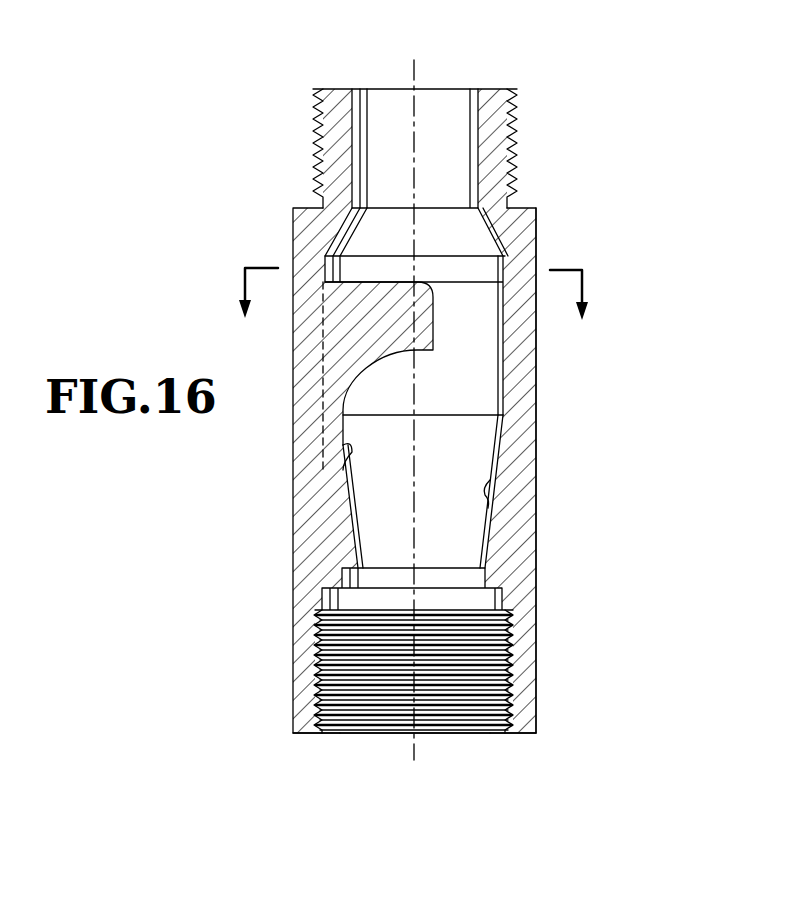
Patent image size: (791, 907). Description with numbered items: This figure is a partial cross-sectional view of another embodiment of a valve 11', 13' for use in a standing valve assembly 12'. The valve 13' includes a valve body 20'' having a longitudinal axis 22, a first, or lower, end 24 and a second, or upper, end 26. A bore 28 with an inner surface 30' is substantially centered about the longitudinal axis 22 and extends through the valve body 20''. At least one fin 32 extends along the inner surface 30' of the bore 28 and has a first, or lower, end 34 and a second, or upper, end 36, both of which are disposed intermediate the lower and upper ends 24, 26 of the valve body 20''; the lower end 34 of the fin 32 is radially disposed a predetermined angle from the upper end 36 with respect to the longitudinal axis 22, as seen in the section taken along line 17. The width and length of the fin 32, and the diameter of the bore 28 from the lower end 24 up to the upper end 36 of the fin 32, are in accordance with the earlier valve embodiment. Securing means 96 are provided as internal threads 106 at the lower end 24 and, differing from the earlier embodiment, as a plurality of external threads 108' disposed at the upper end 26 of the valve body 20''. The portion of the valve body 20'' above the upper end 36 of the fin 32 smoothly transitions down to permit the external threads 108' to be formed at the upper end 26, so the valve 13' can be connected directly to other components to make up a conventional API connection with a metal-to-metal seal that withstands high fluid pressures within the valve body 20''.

The valve 11' is at (500, 470).
The standing valve assembly 12' is at (495, 136).
The valve 13' is at (575, 470).
The section line 17- 17 is at (414, 287).
The valve body 20'' is at (468, 584).
The longitudinal axis 22 is at (412, 62).
The first, or lower, end 24 is at (500, 744).
The second, or upper, end 26 is at (530, 97).
The bore 28 is at (385, 690).
The inner surface 30' is at (546, 491).
The fin 32 is at (345, 456).
The first, or lower, end of fin 34 is at (348, 545).
The second, or upper, end of fin 36 is at (345, 258).
The securing means 96 is at (524, 155).
The internal threads 106 is at (333, 735).
The external threads 108' is at (271, 142).